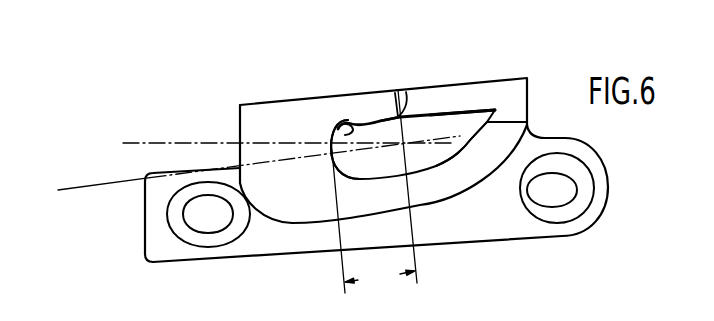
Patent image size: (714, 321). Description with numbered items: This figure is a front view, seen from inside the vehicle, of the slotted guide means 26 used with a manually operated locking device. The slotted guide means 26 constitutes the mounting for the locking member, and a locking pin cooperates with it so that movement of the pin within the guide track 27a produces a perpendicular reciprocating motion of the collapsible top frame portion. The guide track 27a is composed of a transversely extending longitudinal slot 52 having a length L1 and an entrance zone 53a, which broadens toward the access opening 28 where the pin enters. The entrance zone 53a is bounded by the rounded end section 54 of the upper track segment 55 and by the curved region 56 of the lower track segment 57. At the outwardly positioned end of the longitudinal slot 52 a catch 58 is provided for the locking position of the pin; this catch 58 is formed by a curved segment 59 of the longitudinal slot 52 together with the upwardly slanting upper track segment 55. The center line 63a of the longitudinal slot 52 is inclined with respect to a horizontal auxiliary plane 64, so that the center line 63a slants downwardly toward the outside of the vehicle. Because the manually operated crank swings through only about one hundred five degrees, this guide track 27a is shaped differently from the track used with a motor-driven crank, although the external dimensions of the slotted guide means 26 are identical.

The slotted guide means 26 is at (224, 122).
The guide track 27a is at (382, 170).
The access opening 28 is at (438, 114).
The longitudinal slot 52 is at (342, 174).
The entrance zone 53a is at (424, 143).
The rounded end section 54 is at (411, 101).
The upper track segment 55 is at (387, 113).
The curved region 56 is at (463, 144).
The lower track segment 57 is at (432, 169).
The catch 58 is at (350, 131).
The curved segment 59 is at (372, 122).
The center line 63a is at (83, 188).
The horizontal auxiliary plane 64 is at (143, 142).
The length L1 is at (373, 216).